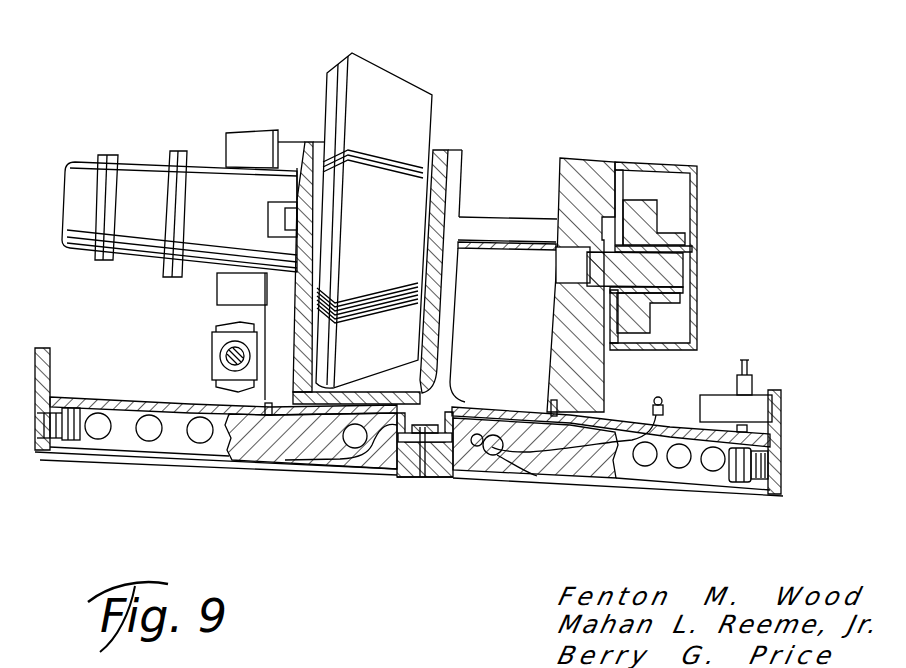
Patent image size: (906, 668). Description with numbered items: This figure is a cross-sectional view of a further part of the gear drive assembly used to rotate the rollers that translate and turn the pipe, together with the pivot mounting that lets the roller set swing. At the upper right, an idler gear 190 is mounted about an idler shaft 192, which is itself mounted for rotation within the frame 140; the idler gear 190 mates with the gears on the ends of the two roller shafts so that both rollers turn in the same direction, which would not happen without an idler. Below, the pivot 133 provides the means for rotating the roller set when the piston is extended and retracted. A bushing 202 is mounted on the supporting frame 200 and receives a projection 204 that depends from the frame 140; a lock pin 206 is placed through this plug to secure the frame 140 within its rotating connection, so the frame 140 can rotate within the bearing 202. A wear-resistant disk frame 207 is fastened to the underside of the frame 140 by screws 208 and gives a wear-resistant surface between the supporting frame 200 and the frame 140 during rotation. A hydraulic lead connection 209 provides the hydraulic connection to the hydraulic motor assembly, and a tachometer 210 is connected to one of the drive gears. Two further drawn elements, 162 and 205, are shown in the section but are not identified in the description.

The pivot 133 is at (375, 494).
The frame 140 is at (590, 170).
The housing 162 is at (647, 167).
The idler gear 190 is at (655, 212).
The idler shaft 192 is at (667, 267).
The supporting frame 200 is at (140, 458).
The bushing 202 is at (370, 458).
The projection 204 is at (445, 413).
The rod 205 is at (420, 473).
The lock pin 206 is at (425, 478).
The wear-resistant disk frame 207 is at (520, 412).
The screws 208 is at (540, 400).
The hydraulic lead connection 209 is at (572, 450).
The tachometer 210 is at (240, 212).